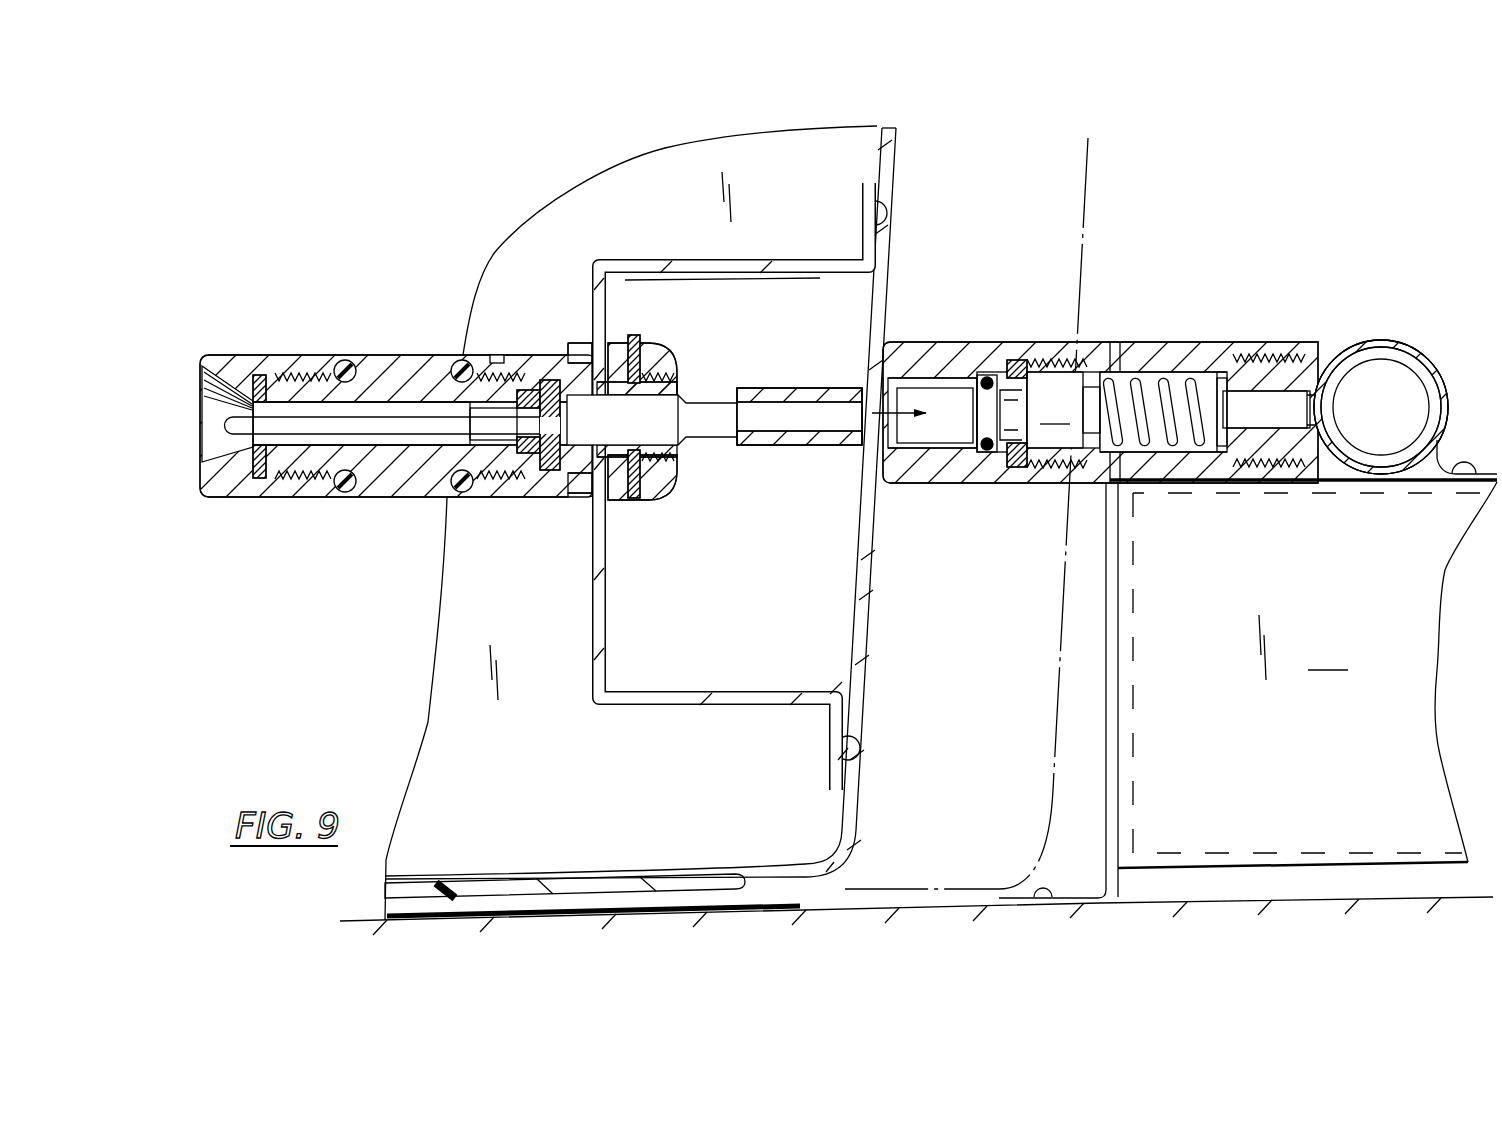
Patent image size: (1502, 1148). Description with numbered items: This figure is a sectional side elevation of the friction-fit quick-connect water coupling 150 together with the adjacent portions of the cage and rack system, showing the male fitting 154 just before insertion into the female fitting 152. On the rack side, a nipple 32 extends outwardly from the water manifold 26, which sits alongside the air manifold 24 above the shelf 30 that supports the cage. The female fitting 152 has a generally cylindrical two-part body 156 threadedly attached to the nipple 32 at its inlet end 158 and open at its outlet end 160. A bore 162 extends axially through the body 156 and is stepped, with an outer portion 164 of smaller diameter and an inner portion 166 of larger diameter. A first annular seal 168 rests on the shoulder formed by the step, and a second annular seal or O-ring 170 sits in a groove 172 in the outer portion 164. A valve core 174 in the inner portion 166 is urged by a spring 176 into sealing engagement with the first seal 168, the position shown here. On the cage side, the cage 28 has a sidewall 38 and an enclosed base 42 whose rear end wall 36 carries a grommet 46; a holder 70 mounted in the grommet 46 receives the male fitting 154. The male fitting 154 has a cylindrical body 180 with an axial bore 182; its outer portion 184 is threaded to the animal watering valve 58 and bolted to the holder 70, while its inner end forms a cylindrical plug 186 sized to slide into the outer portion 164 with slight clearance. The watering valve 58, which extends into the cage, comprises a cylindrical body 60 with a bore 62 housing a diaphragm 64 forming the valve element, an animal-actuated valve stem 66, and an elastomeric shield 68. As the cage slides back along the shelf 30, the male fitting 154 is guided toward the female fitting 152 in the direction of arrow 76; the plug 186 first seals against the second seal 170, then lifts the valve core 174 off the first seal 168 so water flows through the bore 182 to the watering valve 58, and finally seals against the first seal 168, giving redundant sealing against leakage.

The air manifold 24 is at (1303, 674).
The water manifold 26 is at (1412, 380).
The cage 28 is at (590, 192).
The shelf 30 is at (903, 896).
The nipple 32 is at (1290, 345).
The rear end wall 36 is at (858, 816).
The sidewall 38 is at (726, 176).
The base 42 is at (775, 898).
The grommet 46 is at (596, 648).
The animal watering valve 58 is at (248, 352).
The body 60 is at (406, 355).
The bore 62 is at (290, 408).
The diaphragm 64 is at (548, 472).
The valve stem 66 is at (232, 428).
The elastomeric shield 68 is at (235, 410).
The holder 70 is at (580, 345).
The arrow 76 is at (902, 398).
The coupling 150 is at (935, 268).
The female fitting 152 is at (1180, 340).
The male fitting 154 is at (668, 350).
The body 156 is at (1040, 486).
The inlet end 158 is at (1312, 483).
The outlet end 160 is at (873, 472).
The bore 162 is at (1277, 420).
The outer portion 164 is at (950, 430).
The inner portion 166 is at (1143, 398).
The first annular seal 168 is at (1013, 370).
The second annular seal 170 is at (986, 375).
The groove 172 is at (976, 386).
The valve core 174 is at (1063, 410).
The spring 176 is at (1189, 375).
The body 180 is at (620, 470).
The bore 182 is at (775, 432).
The outer portion 184 is at (497, 355).
The plug 186 is at (787, 392).